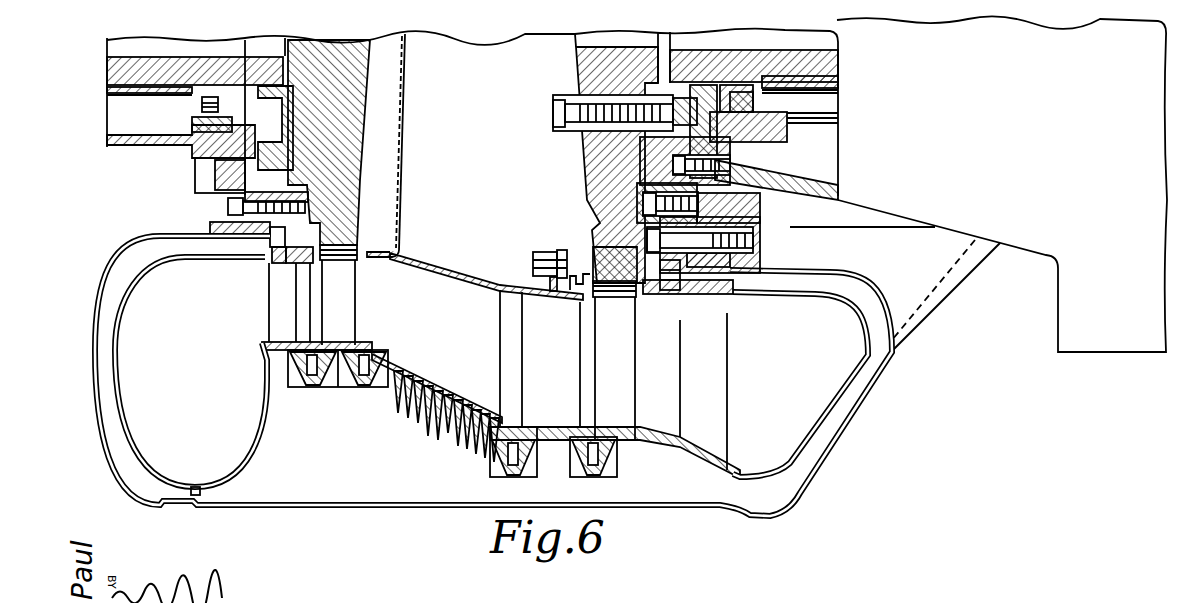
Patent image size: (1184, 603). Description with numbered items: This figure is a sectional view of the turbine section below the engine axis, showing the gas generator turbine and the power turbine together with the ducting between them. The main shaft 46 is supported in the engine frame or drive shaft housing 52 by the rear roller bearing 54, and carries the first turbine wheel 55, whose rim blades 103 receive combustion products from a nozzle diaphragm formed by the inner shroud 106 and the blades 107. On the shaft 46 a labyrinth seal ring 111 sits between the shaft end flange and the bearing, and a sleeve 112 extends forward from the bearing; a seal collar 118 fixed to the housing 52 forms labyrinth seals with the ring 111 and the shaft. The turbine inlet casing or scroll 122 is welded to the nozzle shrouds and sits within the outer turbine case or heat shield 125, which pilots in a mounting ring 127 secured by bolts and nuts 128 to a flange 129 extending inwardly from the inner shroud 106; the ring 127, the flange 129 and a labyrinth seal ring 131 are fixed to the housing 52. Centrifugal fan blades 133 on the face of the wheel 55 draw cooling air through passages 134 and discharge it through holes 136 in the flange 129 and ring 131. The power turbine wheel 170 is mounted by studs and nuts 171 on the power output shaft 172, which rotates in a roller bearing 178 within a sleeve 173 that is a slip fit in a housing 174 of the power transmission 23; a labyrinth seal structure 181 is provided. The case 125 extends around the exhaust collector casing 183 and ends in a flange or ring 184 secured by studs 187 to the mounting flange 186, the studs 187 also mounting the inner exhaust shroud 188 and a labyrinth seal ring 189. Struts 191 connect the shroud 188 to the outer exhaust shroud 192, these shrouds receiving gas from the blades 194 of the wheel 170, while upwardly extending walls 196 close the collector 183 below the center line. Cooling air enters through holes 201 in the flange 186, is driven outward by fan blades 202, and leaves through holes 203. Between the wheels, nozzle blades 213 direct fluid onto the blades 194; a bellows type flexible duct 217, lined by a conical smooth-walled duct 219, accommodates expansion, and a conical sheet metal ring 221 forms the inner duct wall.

The power transmission 23 is at (1140, 354).
The main shaft 46 is at (107, 70).
The engine frame or drive shaft housing 52 is at (152, 146).
The rear roller bearing 54 is at (193, 112).
The first turbine wheel 55 is at (402, 138).
The blades 103 is at (356, 290).
The inner shroud 106 is at (282, 265).
The blades 107 is at (280, 314).
The labyrinth seal ring 111 is at (245, 62).
The sleeve 112 is at (157, 96).
The seal collar 118 is at (273, 157).
The turbine inlet casing or scroll 122 is at (247, 460).
The outer turbine case or heat shield 125 is at (223, 508).
The mounting ring 127 is at (210, 226).
The bolts and nuts 128 is at (228, 207).
The flange 129 is at (245, 188).
The labyrinth seal ring 131 is at (300, 265).
The centrifugal fan blades 133 is at (342, 223).
The passages 134 is at (212, 182).
The holes 136 is at (272, 245).
The power turbine wheel 170 is at (583, 60).
The studs and nuts 171 is at (553, 115).
The power output shaft 172 is at (730, 50).
The sleeve 173 is at (767, 130).
The housing 174 is at (787, 198).
The roller bearing 178 is at (753, 100).
The labyrinth seal structure 181 is at (697, 83).
The exhaust collector casing 183 is at (866, 347).
The flange or ring 184 is at (670, 147).
The mounting flange 186 is at (773, 250).
The studs 187 is at (598, 223).
The inner exhaust shroud 188 is at (650, 303).
The labyrinth seal ring 189 is at (603, 247).
The struts 191 is at (713, 410).
The outer exhaust shroud 192 is at (653, 452).
The blades 194 is at (620, 380).
The upwardly extending walls 196 is at (930, 300).
The holes 201 is at (777, 230).
The fan blades 202 is at (593, 205).
The holes 203 is at (683, 294).
The blades 213 is at (553, 427).
The bellows type flexible duct 217 is at (423, 427).
The conical smooth-walled duct 219 is at (450, 372).
The conical sheet metal ring 221 is at (477, 262).